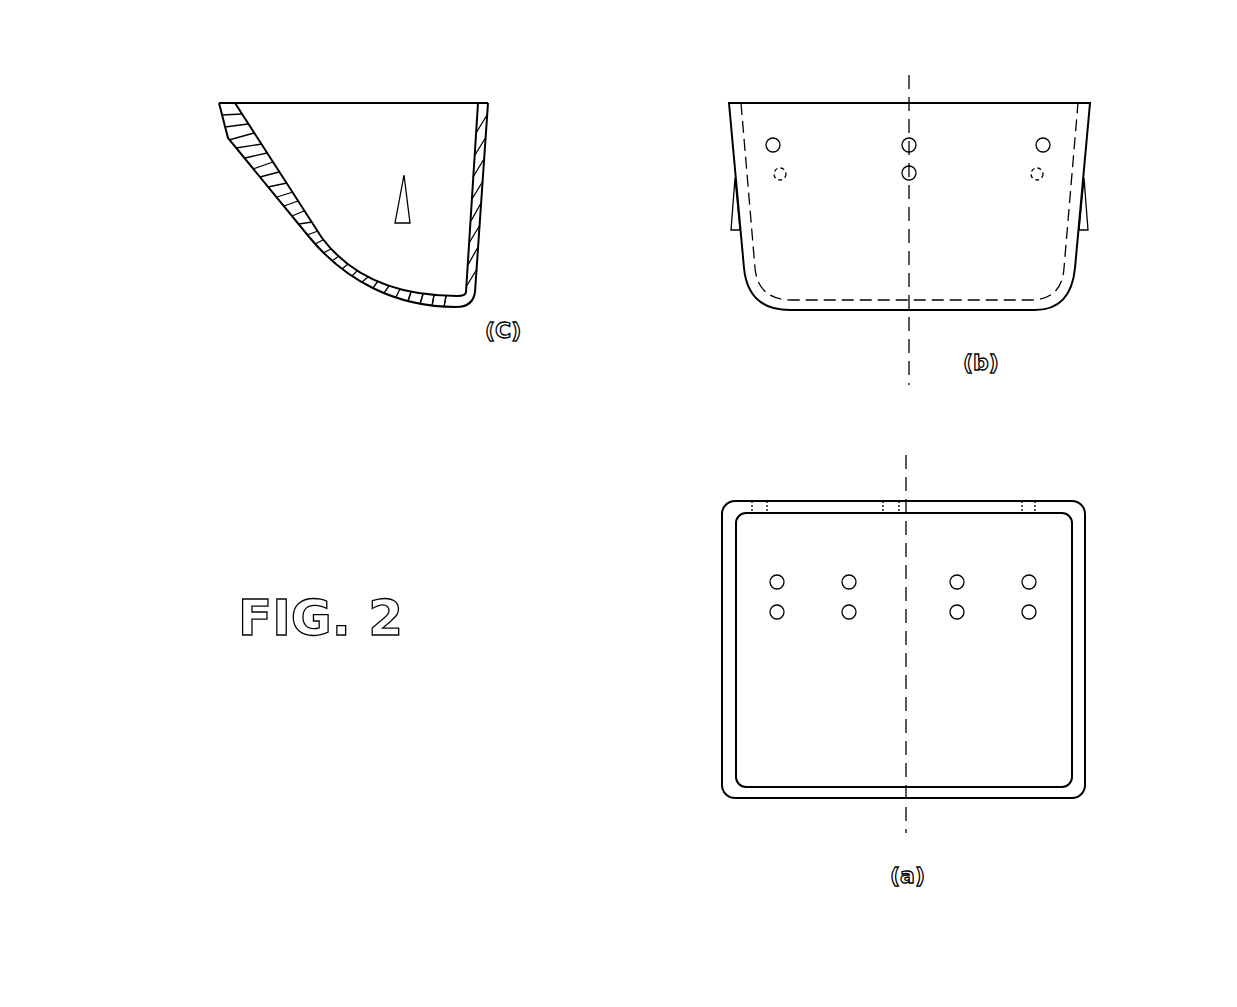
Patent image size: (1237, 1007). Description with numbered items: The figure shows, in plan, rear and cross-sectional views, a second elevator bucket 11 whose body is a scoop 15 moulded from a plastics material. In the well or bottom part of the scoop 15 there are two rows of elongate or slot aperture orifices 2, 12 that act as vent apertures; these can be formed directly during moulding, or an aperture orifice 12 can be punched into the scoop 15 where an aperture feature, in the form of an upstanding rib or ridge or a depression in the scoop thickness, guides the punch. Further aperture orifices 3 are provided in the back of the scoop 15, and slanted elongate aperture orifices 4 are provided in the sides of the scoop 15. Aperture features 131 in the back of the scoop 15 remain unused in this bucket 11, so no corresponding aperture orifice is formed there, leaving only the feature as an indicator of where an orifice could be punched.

The second elevator bucket 11 is at (462, 76).
The scoop 15 is at (300, 224).
The aperture orifices 3 is at (480, 143).
The slanted elongate aperture orifices 4 is at (405, 215).
The aperture orifice 12 is at (410, 306).
The aperture orifices 2 is at (445, 310).
The hidden openings 131 is at (1100, 172).